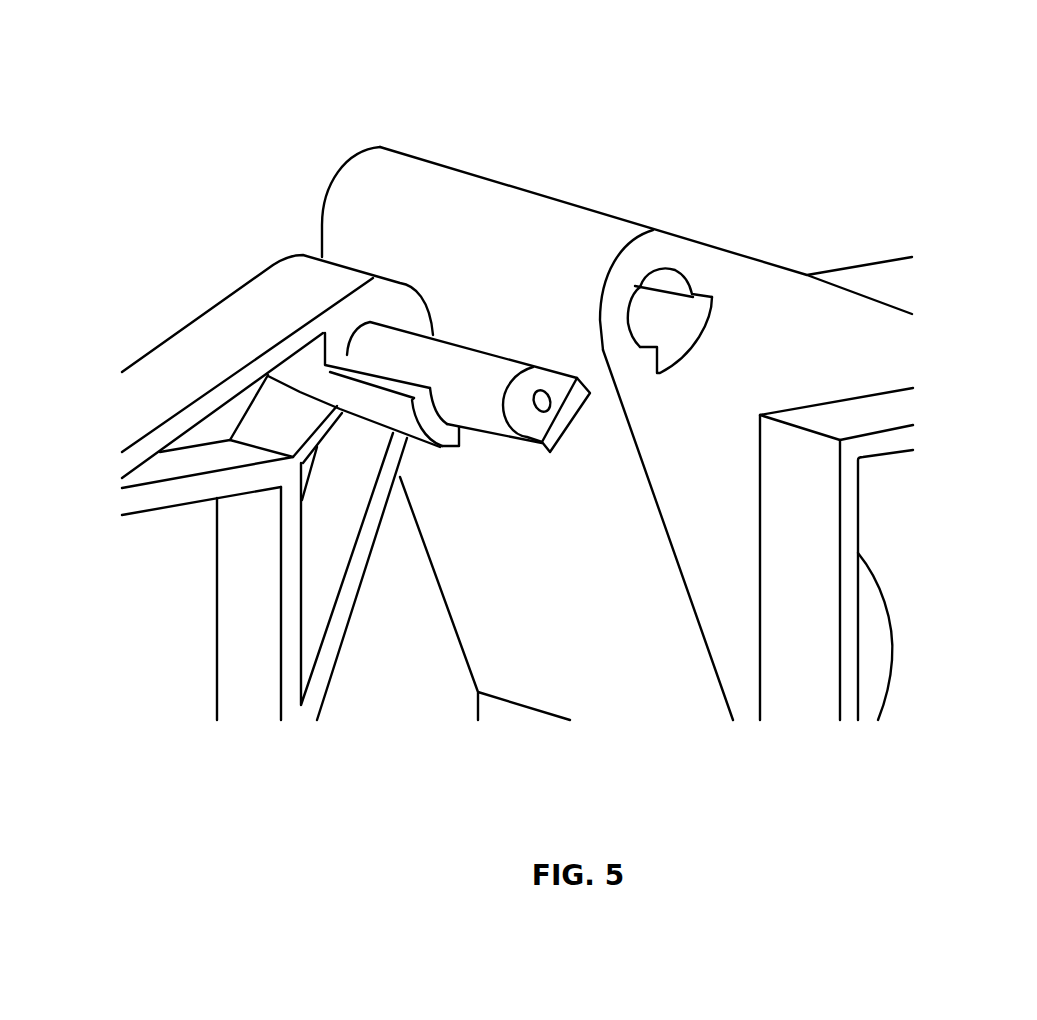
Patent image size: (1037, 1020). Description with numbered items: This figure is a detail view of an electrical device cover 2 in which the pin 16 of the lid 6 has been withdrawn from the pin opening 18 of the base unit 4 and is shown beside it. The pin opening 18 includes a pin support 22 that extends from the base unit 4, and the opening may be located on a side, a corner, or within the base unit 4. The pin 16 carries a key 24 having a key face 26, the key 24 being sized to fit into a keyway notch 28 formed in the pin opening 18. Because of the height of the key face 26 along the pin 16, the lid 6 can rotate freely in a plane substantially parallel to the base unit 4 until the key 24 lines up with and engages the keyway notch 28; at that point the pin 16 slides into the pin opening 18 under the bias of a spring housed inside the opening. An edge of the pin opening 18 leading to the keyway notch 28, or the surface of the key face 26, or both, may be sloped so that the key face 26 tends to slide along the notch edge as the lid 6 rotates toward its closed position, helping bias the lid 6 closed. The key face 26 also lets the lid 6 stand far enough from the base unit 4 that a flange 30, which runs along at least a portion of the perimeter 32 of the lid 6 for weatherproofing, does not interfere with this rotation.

The electrical device cover 2 is at (226, 130).
The base unit 4 is at (817, 543).
The lid 6 is at (176, 353).
The pin 16 is at (490, 367).
The pin opening 18 is at (653, 313).
The pin support 22 is at (763, 340).
The key 24 is at (367, 395).
The key face 26 is at (420, 407).
The keyway notch 28 is at (682, 340).
The flange 30 is at (258, 680).
The perimeter 32 is at (217, 612).